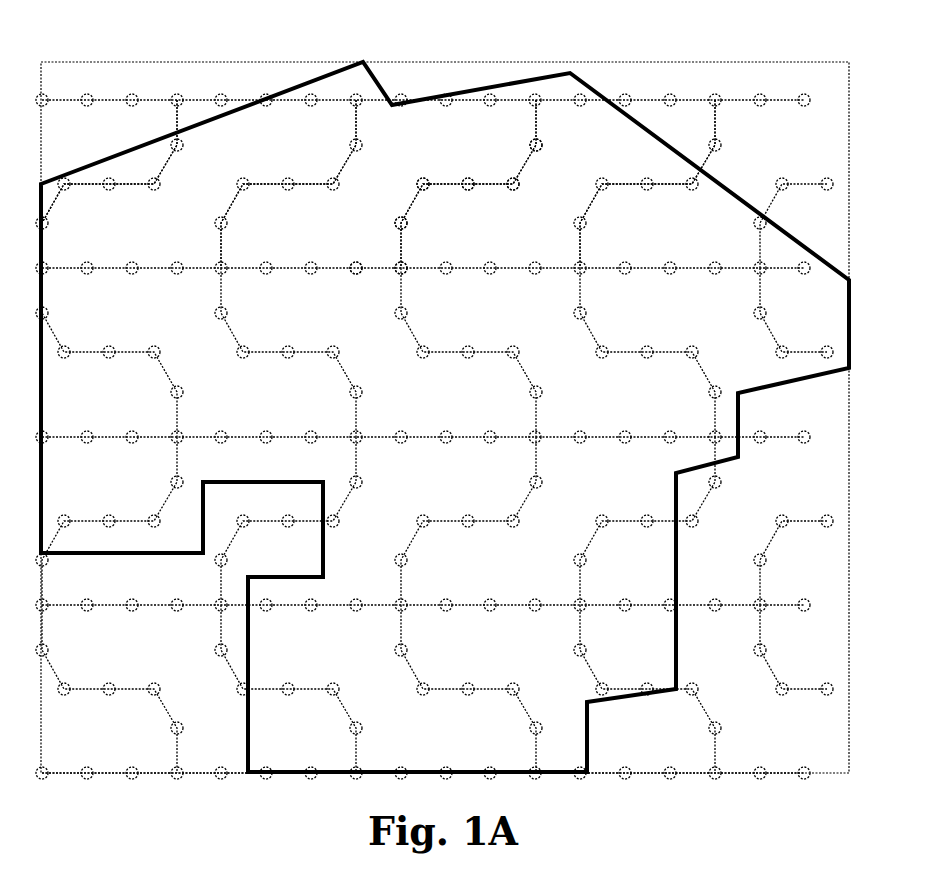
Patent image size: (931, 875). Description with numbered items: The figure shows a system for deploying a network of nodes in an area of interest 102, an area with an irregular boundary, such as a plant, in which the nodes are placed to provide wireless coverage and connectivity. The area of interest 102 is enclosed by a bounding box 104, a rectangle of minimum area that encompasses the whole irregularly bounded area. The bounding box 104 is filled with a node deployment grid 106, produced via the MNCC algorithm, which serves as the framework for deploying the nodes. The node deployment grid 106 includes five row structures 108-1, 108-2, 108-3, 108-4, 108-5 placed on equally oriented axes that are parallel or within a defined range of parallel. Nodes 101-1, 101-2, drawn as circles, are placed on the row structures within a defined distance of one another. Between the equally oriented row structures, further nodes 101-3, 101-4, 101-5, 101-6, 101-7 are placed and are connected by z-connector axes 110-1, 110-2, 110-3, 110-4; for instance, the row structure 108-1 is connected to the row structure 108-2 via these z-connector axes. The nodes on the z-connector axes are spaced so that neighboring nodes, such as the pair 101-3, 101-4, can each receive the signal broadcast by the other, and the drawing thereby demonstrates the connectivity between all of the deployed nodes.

The node 101-1 is at (355, 262).
The node 101-2 is at (398, 275).
The node 101-3 is at (403, 228).
The node 101-4 is at (418, 185).
The node 101-5 is at (468, 179).
The node 101-6 is at (513, 179).
The node 101-7 is at (541, 146).
The area of interest 102 is at (317, 77).
The bounding box 104 is at (709, 62).
The node deployment grid 106 is at (428, 314).
The row structure 108-1 is at (158, 98).
The row structure 108-2 is at (158, 266).
The row structure 108-3 is at (158, 435).
The row structure 108-4 is at (158, 603).
The row structure 108-5 is at (155, 771).
The z-connector axis 110-1 is at (170, 178).
The z-connector axis 110-2 is at (349, 180).
The z-connector axis 110-3 is at (495, 197).
The z-connector axis 110-4 is at (672, 194).